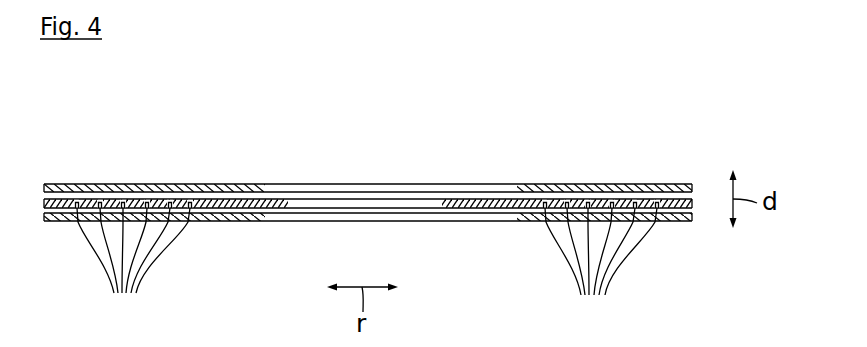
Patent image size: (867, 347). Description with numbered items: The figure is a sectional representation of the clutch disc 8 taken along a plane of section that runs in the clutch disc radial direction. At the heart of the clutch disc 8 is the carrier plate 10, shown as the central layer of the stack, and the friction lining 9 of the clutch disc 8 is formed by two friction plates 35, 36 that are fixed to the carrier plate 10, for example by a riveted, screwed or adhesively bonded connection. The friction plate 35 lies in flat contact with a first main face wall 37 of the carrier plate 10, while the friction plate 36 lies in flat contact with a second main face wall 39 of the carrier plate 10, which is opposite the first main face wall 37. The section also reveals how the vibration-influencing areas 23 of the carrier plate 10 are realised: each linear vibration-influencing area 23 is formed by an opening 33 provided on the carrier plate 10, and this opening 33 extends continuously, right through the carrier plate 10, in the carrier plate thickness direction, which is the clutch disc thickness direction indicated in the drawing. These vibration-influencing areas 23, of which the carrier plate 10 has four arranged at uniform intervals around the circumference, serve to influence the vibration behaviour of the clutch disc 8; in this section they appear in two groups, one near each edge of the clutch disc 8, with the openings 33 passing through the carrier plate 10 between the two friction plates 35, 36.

The clutch disc 8 is at (688, 133).
The friction lining 9 is at (368, 155).
The carrier plate 10 is at (475, 199).
The vibration-influencing area 23 is at (121, 165).
The opening 33 is at (367, 262).
The friction plate 35 is at (196, 185).
The friction plate 36 is at (325, 140).
The first main face wall 37 is at (265, 190).
The second main face wall 39 is at (257, 205).